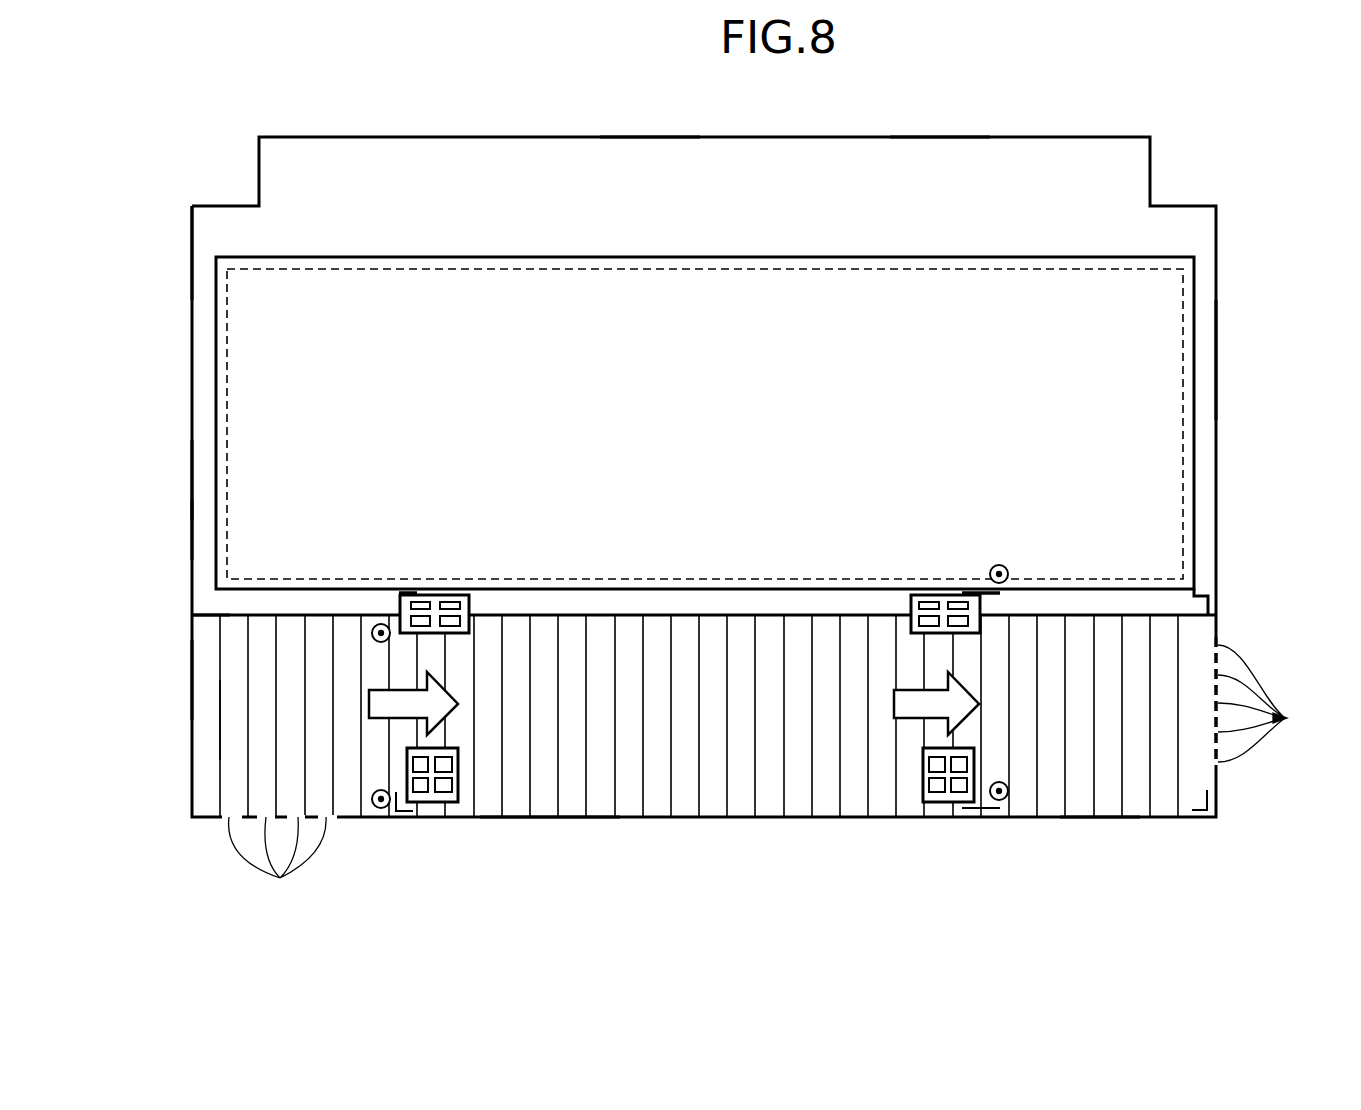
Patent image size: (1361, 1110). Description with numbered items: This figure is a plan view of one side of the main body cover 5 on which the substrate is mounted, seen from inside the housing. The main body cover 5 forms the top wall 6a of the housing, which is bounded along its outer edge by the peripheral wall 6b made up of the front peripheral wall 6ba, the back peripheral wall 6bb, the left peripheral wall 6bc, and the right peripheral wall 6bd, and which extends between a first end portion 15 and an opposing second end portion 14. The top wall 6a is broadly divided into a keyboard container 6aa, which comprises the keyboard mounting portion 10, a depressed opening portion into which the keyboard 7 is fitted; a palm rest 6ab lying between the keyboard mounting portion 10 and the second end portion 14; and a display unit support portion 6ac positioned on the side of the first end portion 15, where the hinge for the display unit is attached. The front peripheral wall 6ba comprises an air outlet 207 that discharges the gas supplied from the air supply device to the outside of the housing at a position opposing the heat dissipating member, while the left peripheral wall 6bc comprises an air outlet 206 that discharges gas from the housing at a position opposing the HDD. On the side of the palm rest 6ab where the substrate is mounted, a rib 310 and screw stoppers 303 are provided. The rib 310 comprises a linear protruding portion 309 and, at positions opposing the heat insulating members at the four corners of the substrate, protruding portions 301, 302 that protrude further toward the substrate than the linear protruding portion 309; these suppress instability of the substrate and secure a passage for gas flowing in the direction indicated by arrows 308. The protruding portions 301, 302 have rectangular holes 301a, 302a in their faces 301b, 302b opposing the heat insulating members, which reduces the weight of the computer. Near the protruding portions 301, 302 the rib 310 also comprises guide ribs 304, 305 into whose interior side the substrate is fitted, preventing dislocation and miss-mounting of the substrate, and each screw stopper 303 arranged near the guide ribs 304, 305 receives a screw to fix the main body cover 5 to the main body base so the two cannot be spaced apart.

The main body cover 5 is at (752, 122).
The keyboard 7 is at (1184, 414).
The keyboard mounting portion 10 is at (216, 347).
The second end portion 14 is at (678, 818).
The first end portion 15 is at (651, 137).
The top wall 6a is at (1166, 818).
The peripheral wall 6b is at (1105, 818).
The keyboard container 6aa is at (192, 481).
The palm rest 6ab is at (192, 679).
The display unit support portion 6ac is at (192, 232).
The front peripheral wall 6ba is at (540, 818).
The back peripheral wall 6bb is at (937, 137).
The left peripheral wall 6bc is at (1216, 363).
The right peripheral wall 6bd is at (192, 518).
The air outlet 206 is at (1275, 701).
The air outlet 207 is at (279, 865).
The protruding portion 301 is at (442, 802).
The rectangular hole 301a is at (444, 788).
The face 301b is at (432, 802).
The protruding portion 302 is at (452, 602).
The rectangular hole 302a is at (466, 596).
The face 302b is at (437, 602).
The screw stopper 303 is at (380, 623).
The guide rib 304 is at (410, 593).
The guide rib 305 is at (980, 593).
The arrows 308 is at (389, 690).
The linear protruding portion 309 is at (220, 713).
The rib 310 is at (212, 640).